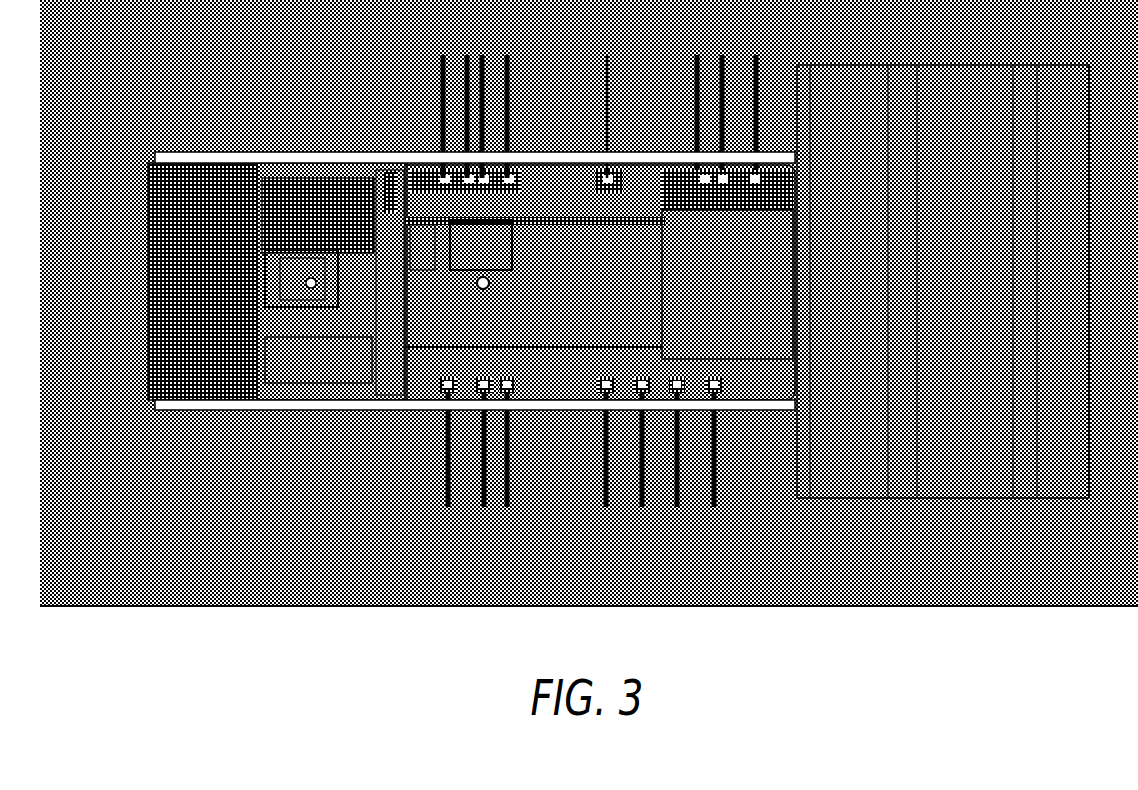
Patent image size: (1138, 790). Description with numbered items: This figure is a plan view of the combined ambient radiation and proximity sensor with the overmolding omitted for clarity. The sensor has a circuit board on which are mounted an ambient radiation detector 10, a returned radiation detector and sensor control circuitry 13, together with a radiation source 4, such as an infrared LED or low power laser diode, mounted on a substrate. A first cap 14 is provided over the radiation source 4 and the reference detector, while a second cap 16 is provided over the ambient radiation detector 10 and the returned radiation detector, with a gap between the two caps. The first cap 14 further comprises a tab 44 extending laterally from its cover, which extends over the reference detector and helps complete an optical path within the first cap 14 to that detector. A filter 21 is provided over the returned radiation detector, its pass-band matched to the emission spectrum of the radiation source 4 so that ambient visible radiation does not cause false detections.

The radiation source 4 is at (927, 285).
The ambient radiation detector 10 is at (303, 270).
The sensor control circuitry 13 is at (573, 330).
The first cap 14 is at (1072, 299).
The second cap 16 is at (352, 185).
The filter 21 is at (222, 345).
The tab 44 is at (735, 318).